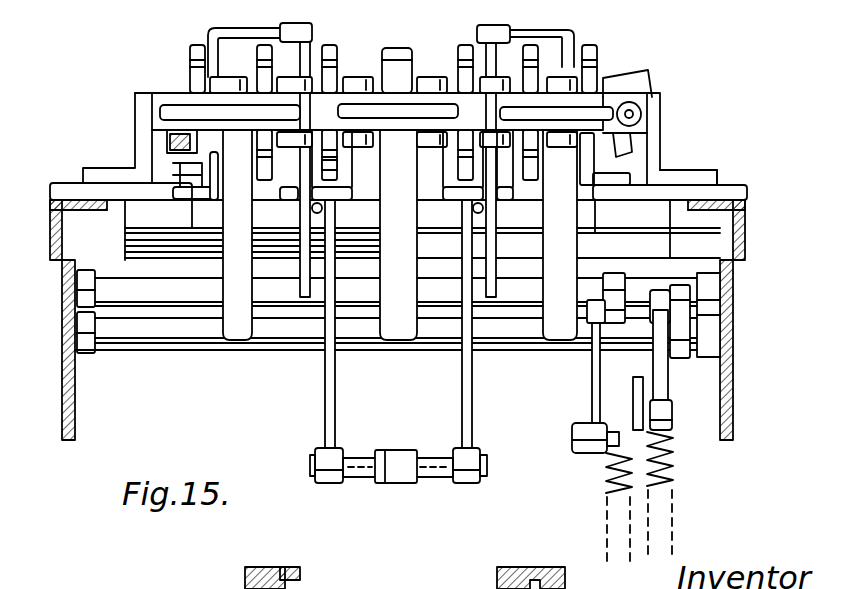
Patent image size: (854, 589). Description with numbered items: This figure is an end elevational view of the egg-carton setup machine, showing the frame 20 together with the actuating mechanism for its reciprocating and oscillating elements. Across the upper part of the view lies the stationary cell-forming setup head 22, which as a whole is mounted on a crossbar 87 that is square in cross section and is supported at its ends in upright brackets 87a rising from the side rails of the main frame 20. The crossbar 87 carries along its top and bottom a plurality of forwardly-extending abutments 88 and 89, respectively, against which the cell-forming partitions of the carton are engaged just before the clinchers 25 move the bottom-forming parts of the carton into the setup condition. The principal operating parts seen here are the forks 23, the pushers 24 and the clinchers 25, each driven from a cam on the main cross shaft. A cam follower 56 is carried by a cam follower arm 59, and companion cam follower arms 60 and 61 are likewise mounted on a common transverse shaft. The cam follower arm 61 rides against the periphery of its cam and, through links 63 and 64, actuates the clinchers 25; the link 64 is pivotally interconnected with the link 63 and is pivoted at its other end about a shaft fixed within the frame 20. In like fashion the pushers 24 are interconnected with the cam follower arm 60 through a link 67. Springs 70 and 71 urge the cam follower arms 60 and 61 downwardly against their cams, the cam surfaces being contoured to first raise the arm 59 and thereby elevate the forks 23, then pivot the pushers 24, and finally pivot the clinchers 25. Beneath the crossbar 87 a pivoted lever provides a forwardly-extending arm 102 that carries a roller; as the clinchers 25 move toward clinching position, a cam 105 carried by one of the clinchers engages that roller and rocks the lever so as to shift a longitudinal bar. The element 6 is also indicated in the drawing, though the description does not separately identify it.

The frame 20 is at (748, 265).
The setup head 22 is at (155, 80).
The forks 23 is at (462, 385).
The pushers 24 is at (305, 258).
The clinchers 25 is at (243, 110).
The rod 6 is at (545, 408).
The cam follower 56 is at (147, 345).
The cam follower arm 59 is at (388, 452).
The cam follower arm 60 is at (585, 452).
The cam follower arm 61 is at (662, 418).
The link 63 is at (668, 382).
The link 64 is at (672, 292).
The link 67 is at (610, 273).
The spring 70 is at (610, 483).
The spring 71 is at (665, 458).
The crossbar 87 is at (642, 127).
The upright brackets 87a is at (697, 180).
The forwardly-extending abutments 88 is at (383, 53).
The forwardly-extending abutments 89 is at (338, 167).
The forwardly-extending arm 102 is at (173, 155).
The cam 105 is at (163, 132).